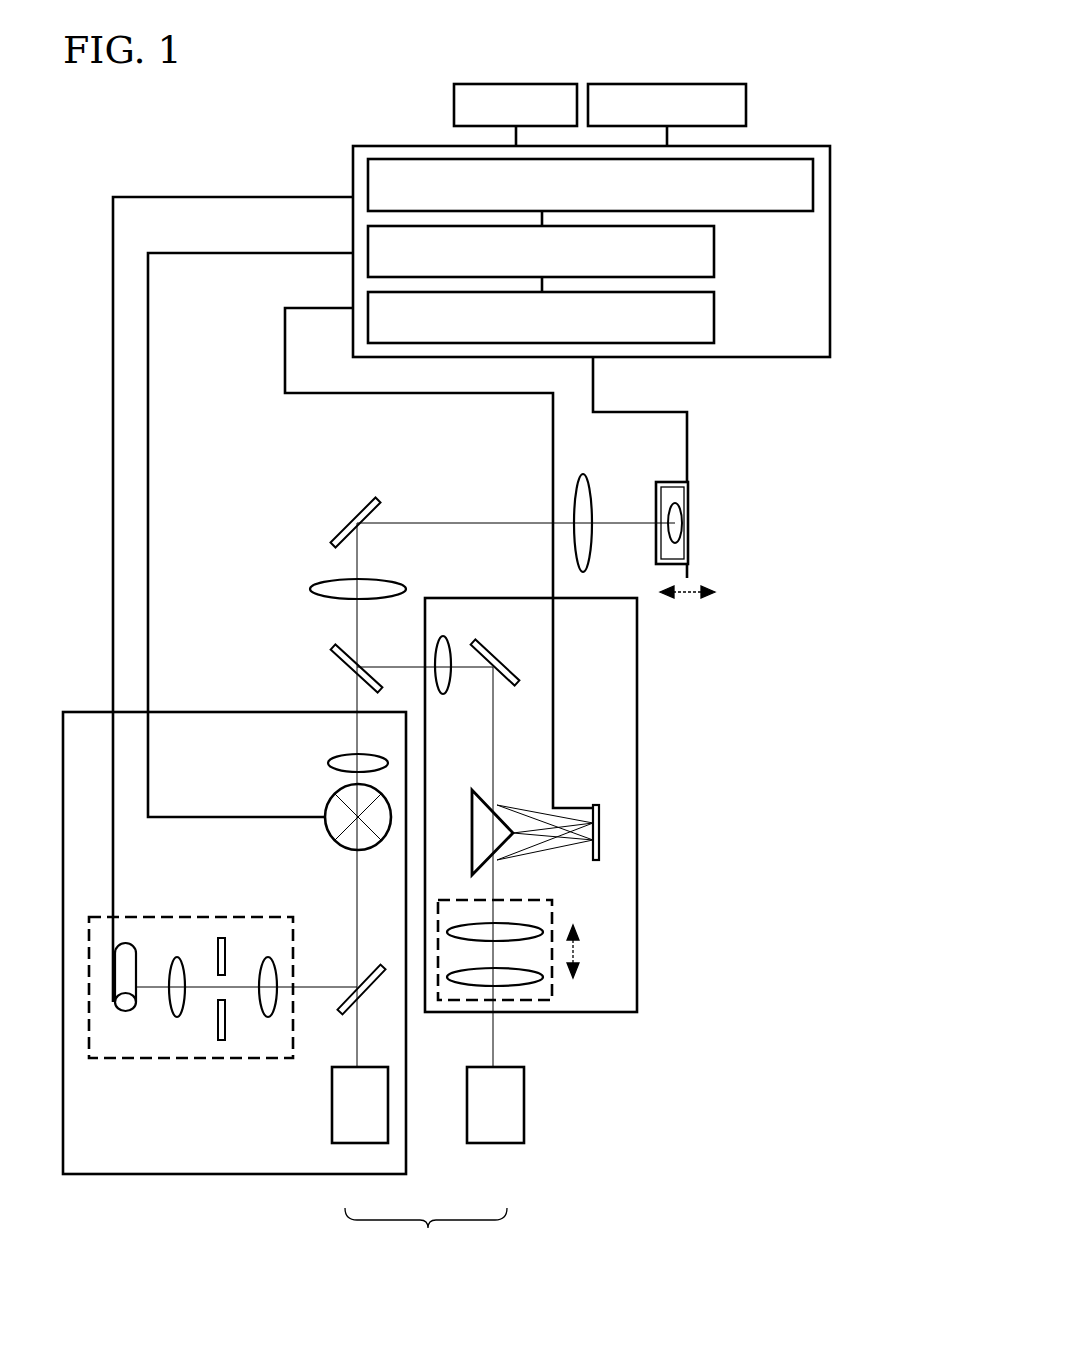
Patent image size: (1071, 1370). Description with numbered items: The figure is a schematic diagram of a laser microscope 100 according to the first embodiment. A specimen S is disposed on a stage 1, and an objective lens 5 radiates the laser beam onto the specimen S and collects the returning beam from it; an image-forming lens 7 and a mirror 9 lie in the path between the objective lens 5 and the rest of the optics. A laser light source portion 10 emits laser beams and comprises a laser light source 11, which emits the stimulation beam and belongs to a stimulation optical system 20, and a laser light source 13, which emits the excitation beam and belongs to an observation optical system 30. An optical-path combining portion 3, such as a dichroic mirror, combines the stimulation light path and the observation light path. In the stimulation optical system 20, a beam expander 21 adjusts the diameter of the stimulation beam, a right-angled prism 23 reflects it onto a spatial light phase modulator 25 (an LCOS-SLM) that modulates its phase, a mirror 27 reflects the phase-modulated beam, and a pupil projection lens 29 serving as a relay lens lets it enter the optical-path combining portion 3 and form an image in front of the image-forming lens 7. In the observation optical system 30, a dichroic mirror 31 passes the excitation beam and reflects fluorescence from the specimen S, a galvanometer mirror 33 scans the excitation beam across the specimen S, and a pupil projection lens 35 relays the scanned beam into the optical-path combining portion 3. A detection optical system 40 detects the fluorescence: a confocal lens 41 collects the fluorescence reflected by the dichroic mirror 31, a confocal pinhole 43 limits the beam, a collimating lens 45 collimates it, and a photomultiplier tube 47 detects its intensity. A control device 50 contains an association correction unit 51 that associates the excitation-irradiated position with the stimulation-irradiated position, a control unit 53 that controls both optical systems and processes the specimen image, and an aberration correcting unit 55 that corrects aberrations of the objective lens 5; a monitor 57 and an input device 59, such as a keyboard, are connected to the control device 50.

The stage 1 is at (690, 576).
The specimen S is at (682, 523).
The optical-path combining portion 3 is at (333, 665).
The objective lens 5 is at (586, 479).
The image-forming lens 7 is at (312, 589).
The mirror 9 is at (333, 537).
The laser light source portion 10 is at (426, 1238).
The laser light source 11 is at (491, 1143).
The laser light source 13 is at (365, 1143).
The stimulation optical system 20 is at (640, 897).
The beam expander 21 is at (553, 914).
The right-angled prism 23 is at (470, 825).
The spatial light phase modulator 25 is at (601, 849).
The mirror 27 is at (508, 674).
The pupil projection lens 29 is at (448, 637).
The observation optical system 30 is at (177, 1174).
The dichroic mirror 31 is at (378, 965).
The galvanometer mirror 33 is at (329, 833).
The pupil projection lens 35 is at (328, 763).
The detection optical system 40 is at (177, 917).
The confocal lens 41 is at (268, 1018).
The confocal pinhole 43 is at (216, 1040).
The collimating lens 45 is at (177, 1018).
The photomultiplier tube 47 is at (125, 1012).
The control device 50 is at (353, 160).
The association correction unit 51 is at (403, 159).
The control unit 53 is at (714, 250).
The aberration correcting unit 55 is at (714, 316).
The monitor 57 is at (511, 84).
The input device 59 is at (667, 84).
The laser microscope 100 is at (700, 1124).